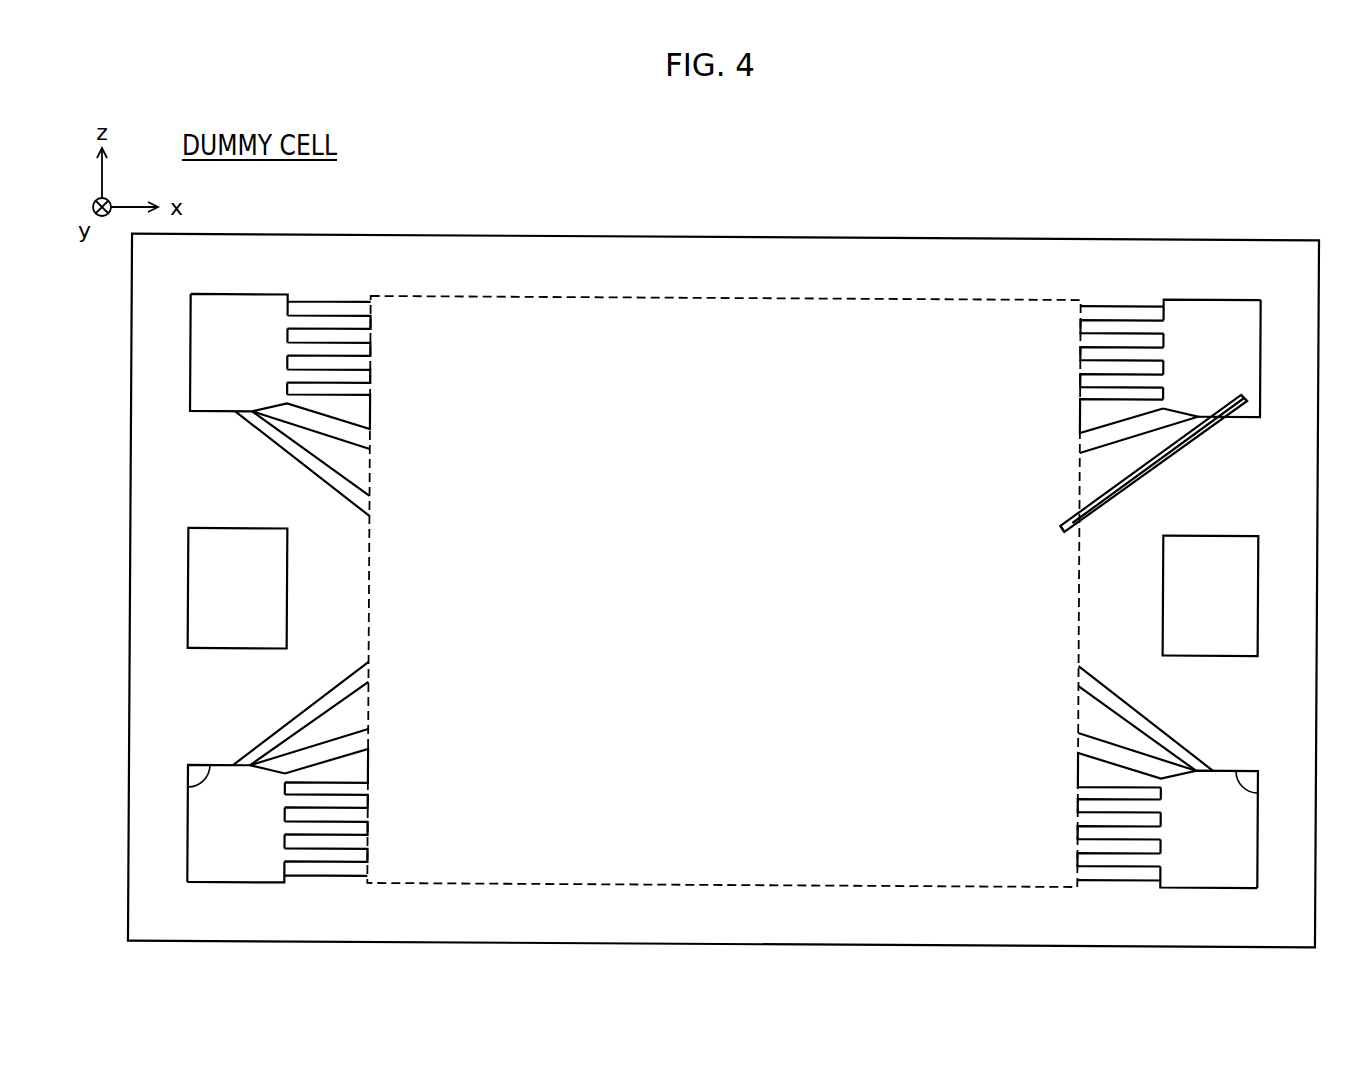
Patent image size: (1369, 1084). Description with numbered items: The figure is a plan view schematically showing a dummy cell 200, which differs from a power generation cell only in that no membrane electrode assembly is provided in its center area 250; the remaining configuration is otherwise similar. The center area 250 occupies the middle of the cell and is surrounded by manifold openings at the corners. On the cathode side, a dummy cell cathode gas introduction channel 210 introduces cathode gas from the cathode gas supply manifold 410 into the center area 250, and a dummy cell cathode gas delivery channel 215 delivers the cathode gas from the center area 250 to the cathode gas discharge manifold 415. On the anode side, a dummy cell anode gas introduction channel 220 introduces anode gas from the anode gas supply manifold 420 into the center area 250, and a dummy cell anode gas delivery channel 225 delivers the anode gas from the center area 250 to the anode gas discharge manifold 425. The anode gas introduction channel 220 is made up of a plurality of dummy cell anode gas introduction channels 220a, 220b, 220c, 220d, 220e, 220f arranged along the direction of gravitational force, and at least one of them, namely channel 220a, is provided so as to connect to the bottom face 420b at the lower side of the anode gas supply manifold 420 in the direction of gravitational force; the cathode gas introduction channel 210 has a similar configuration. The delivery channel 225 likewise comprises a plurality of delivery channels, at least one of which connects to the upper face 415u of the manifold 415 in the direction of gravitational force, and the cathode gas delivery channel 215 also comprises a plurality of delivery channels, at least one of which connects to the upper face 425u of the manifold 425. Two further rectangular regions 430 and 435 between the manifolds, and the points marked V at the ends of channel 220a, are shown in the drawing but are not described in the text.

The dummy cell 200 is at (1193, 157).
The center area 250 is at (940, 298).
The dummy cell cathode gas introduction channel 210 is at (261, 468).
The dummy cell cathode gas delivery channel 215 is at (1180, 711).
The dummy cell anode gas introduction channel 220 is at (1165, 464).
The dummy cell anode gas introduction channel 220a is at (1134, 484).
The dummy cell anode gas introduction channel 220b is at (1064, 448).
The dummy cell anode gas introduction channel 220c is at (1064, 398).
The dummy cell anode gas introduction channel 220d is at (1064, 370).
The dummy cell anode gas introduction channel 220e is at (1064, 345).
The dummy cell anode gas introduction channel 220f is at (1064, 318).
The dummy cell anode gas delivery channel 225 is at (258, 716).
The cathode gas supply manifold 410 is at (217, 374).
The cathode gas discharge manifold 415 is at (1189, 852).
The upper face 415u is at (1259, 786).
The anode gas supply manifold 420 is at (1114, 377).
The bottom face 420b is at (1190, 411).
The anode gas discharge manifold 425 is at (214, 854).
The upper face 425u is at (189, 788).
The pad 430 is at (217, 612).
The pad 435 is at (1191, 612).
The via V is at (1240, 403).